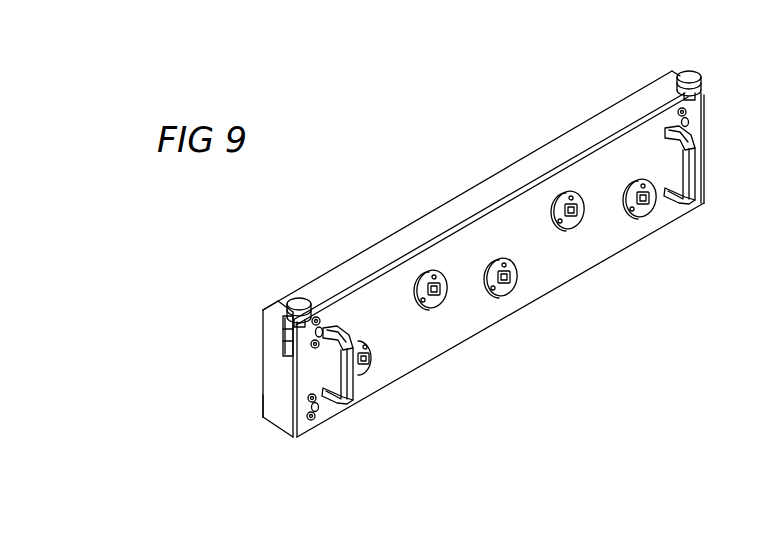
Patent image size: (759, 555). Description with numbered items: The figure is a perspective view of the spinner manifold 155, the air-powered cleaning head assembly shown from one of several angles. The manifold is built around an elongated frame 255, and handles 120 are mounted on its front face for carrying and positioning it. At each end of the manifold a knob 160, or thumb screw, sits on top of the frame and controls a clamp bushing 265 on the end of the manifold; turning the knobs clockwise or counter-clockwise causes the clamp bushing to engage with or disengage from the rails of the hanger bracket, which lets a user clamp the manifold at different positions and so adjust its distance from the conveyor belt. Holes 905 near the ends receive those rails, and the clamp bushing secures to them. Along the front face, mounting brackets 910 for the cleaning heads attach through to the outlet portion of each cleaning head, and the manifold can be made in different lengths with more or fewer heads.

The spinner manifold 155 is at (489, 130).
The knobs 160 is at (291, 299).
The holes 905 is at (678, 117).
The mounting brackets 910 is at (431, 309).
The handles 120 is at (336, 405).
The frame 255 is at (268, 343).
The clamp bushing 265 is at (267, 423).